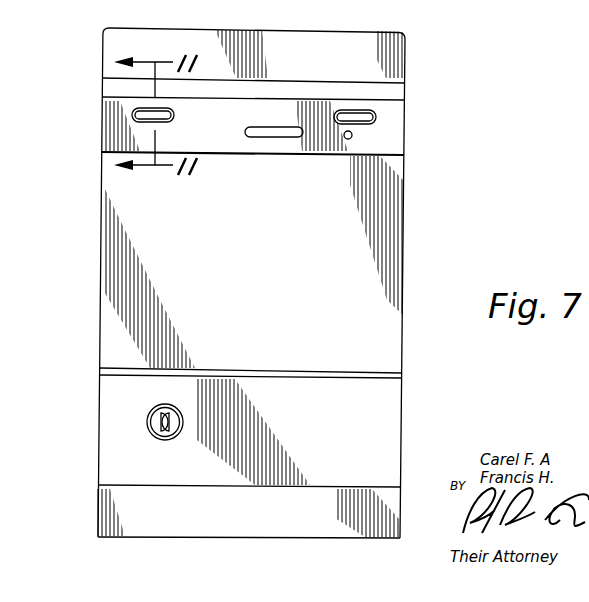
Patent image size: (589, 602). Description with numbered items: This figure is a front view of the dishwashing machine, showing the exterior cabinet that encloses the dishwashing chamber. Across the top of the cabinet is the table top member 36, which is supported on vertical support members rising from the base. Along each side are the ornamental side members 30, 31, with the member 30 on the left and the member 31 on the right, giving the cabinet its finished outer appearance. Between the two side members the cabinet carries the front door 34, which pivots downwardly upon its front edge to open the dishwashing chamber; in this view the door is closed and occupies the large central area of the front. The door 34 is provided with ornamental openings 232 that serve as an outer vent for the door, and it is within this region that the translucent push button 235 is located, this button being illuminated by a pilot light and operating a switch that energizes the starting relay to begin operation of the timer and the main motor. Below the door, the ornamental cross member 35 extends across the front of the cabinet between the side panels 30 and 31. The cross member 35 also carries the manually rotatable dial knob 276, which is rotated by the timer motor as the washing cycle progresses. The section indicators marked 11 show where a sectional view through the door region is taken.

The ornamental side member 30 is at (103, 237).
The ornamental side member 31 is at (405, 182).
The front door 34 is at (128, 197).
The ornamental cross member 35 is at (377, 433).
The table top member 36 is at (118, 62).
The ornamental openings 232 is at (132, 115).
The translucent push button 235 is at (353, 133).
The dial knob 276 is at (148, 414).
The section line 11- 11 is at (155, 115).